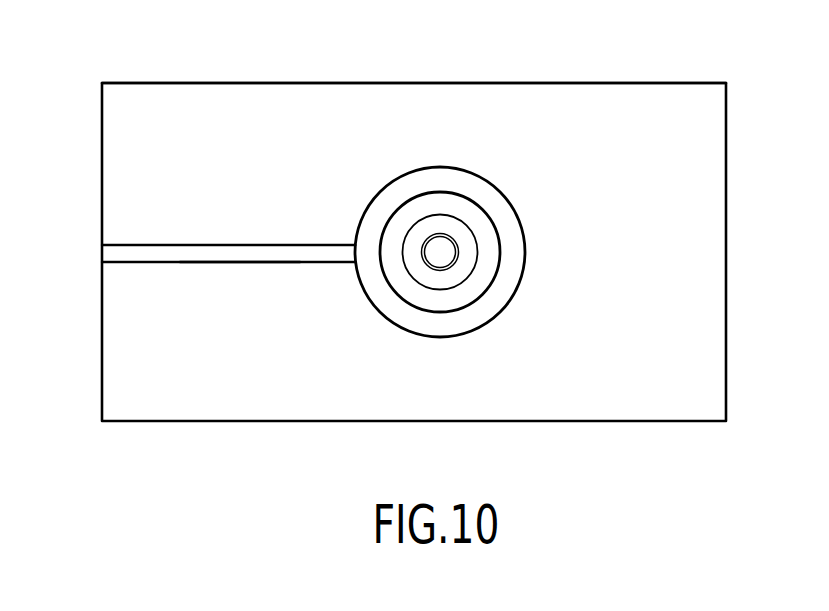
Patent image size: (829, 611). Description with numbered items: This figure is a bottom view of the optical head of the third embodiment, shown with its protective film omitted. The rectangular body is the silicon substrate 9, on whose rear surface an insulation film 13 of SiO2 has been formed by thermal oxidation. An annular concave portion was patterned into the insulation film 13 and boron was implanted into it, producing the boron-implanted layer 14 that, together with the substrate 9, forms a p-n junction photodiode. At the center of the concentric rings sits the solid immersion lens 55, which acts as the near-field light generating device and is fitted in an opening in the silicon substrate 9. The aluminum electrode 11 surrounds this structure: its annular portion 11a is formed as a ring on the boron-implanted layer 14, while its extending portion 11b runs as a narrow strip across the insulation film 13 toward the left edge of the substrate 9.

The silicon substrate 9 is at (632, 83).
The insulation film 13 is at (212, 98).
The electrode 11 is at (138, 245).
The annular portion 11a is at (493, 303).
The extending portion 11b is at (230, 262).
The boron-implanted layer 14 is at (483, 242).
The solid immersion lens 55 is at (441, 250).